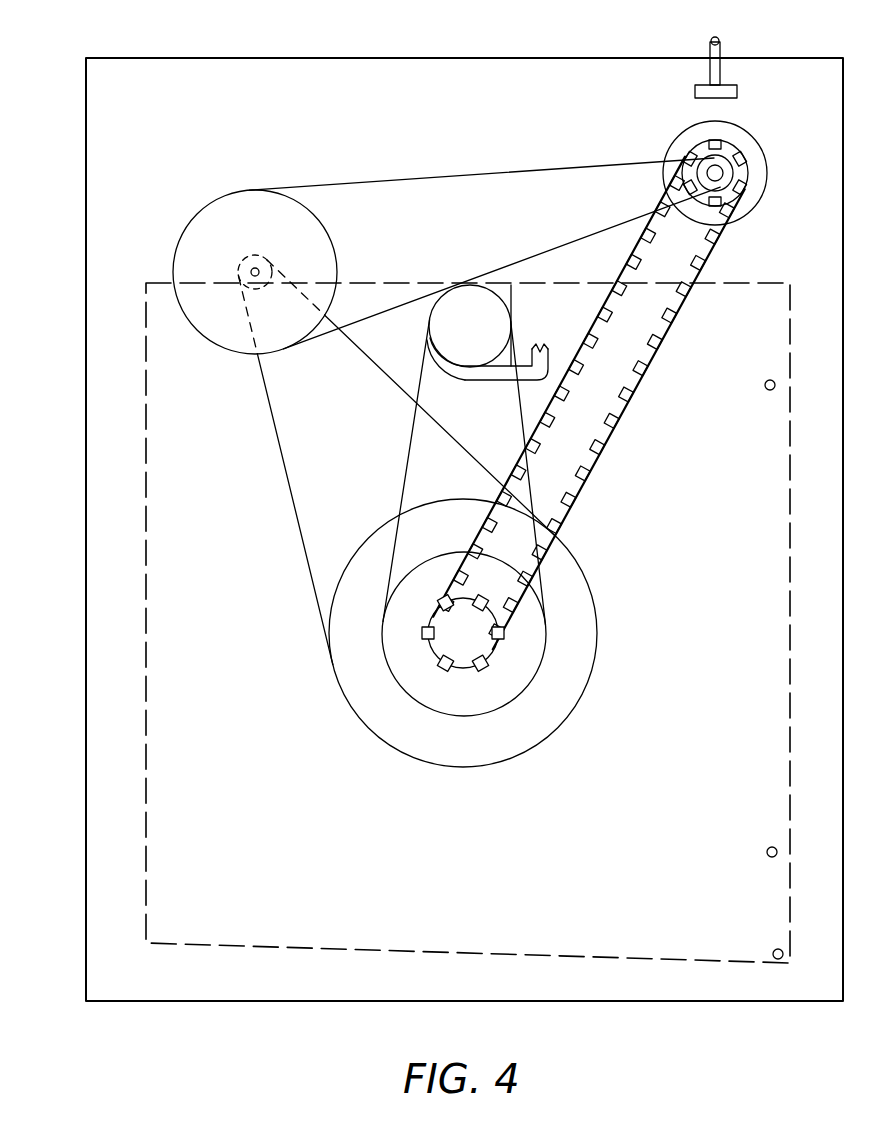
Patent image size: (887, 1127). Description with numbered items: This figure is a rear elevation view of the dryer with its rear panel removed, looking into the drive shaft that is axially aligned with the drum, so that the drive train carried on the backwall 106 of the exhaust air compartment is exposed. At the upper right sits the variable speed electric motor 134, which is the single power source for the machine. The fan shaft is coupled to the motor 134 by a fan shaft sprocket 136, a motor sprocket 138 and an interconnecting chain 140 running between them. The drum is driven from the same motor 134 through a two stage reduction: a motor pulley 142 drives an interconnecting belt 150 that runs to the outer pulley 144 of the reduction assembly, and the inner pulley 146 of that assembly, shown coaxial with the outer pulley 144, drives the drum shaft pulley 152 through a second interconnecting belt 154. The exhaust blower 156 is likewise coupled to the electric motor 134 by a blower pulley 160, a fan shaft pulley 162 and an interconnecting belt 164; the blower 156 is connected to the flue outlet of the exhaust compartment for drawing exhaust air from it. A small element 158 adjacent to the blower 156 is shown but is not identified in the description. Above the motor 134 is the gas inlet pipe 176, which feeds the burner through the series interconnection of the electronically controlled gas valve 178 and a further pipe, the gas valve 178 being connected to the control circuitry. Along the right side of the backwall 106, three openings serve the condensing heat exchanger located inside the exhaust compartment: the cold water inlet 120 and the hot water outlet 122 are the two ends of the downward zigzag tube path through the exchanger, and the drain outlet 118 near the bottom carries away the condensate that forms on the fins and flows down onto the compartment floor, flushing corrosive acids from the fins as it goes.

The backwall 106 is at (110, 215).
The drain outlet 118 is at (774, 950).
The cold water inlet 120 is at (766, 390).
The hot water outlet 122 is at (768, 848).
The variable speed electric motor 134 is at (688, 135).
The fan shaft sprocket 136 is at (477, 651).
The motor sprocket 138 is at (738, 163).
The interconnecting chain 140 is at (720, 256).
The motor pulley 142 is at (716, 188).
The outer pulley 144 is at (213, 200).
The inner pulley 146 is at (248, 263).
The interconnecting belt 150 is at (397, 177).
The drum shaft pulley 152 is at (373, 707).
The interconnecting belt 154 is at (300, 540).
The exhaust blower 156 is at (496, 377).
The tab 158 is at (553, 358).
The blower pulley 160 is at (492, 316).
The fan shaft pulley 162 is at (533, 655).
The interconnecting belt 164 is at (404, 458).
The gas inlet pipe 176 is at (719, 41).
The electronically controlled gas valve 178 is at (737, 90).